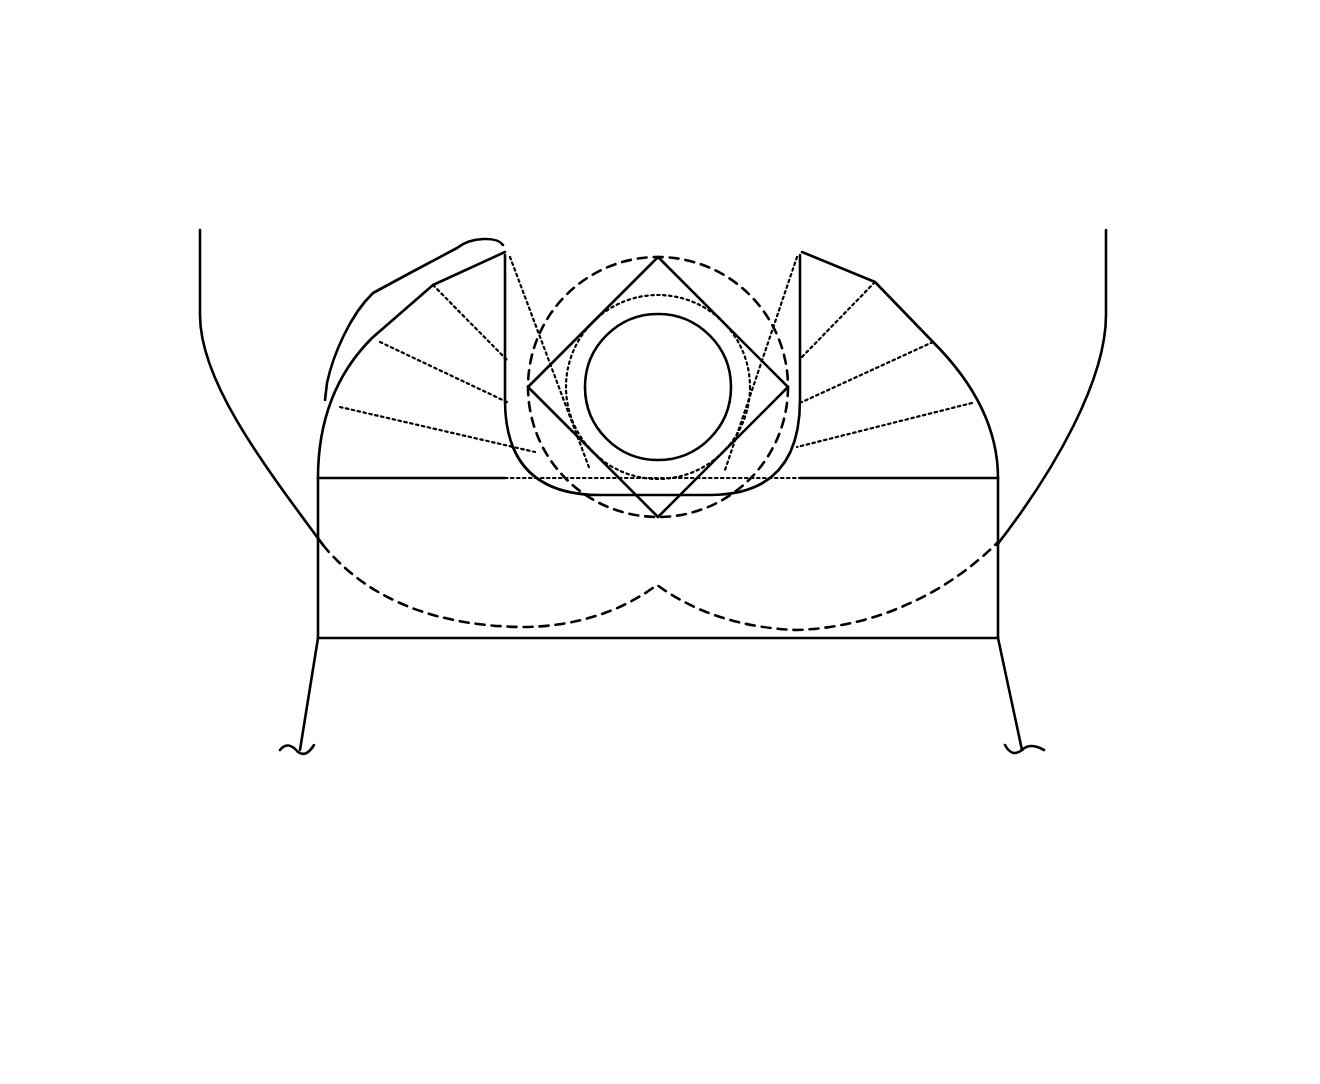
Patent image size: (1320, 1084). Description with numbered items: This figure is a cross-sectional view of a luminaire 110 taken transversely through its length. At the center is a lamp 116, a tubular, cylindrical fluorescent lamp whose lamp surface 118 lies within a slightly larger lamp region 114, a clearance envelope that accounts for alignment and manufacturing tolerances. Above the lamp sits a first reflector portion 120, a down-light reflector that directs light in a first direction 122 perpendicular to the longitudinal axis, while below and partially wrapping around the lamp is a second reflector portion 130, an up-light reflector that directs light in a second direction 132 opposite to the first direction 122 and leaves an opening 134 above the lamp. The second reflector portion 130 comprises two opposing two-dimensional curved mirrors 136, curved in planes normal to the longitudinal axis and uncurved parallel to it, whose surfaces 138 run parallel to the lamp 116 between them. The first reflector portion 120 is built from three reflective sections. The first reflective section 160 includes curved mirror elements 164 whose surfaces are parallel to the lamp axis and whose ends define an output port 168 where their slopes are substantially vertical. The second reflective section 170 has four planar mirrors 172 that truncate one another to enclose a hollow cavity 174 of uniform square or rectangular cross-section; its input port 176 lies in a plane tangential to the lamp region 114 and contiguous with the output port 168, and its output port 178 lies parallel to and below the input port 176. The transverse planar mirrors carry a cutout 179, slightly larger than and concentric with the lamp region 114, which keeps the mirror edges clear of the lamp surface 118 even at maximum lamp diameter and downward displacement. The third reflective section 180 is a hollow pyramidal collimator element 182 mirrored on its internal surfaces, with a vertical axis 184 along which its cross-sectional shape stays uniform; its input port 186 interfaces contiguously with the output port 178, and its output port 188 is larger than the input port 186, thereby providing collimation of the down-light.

The luminaire 110 is at (1137, 160).
The lamp region 114 is at (687, 300).
The lamp 116 is at (631, 401).
The lamp surface 118 is at (603, 337).
The first reflector portion 120 is at (963, 777).
The first direction 122 is at (1218, 362).
The second reflector portion 130 is at (1043, 492).
The second direction 132 is at (1217, 262).
The opening 134 is at (300, 237).
The two-dimensional curved mirror 136 is at (200, 327).
The surface 138 is at (233, 405).
The first reflective section 160 is at (925, 218).
The curved mirror element 164 is at (375, 298).
The output port 168 is at (367, 483).
The second reflective section 170 is at (902, 525).
The planar mirror 172 is at (317, 585).
The hollow cavity 174 is at (443, 582).
The input port 176 is at (938, 475).
The output port 178 is at (937, 642).
The cutout 179 is at (710, 498).
The third reflective section 180 is at (287, 722).
The collimator element 182 is at (308, 703).
The vertical axis 184 is at (669, 707).
The input port 186 is at (972, 635).
The output port 188 is at (845, 783).